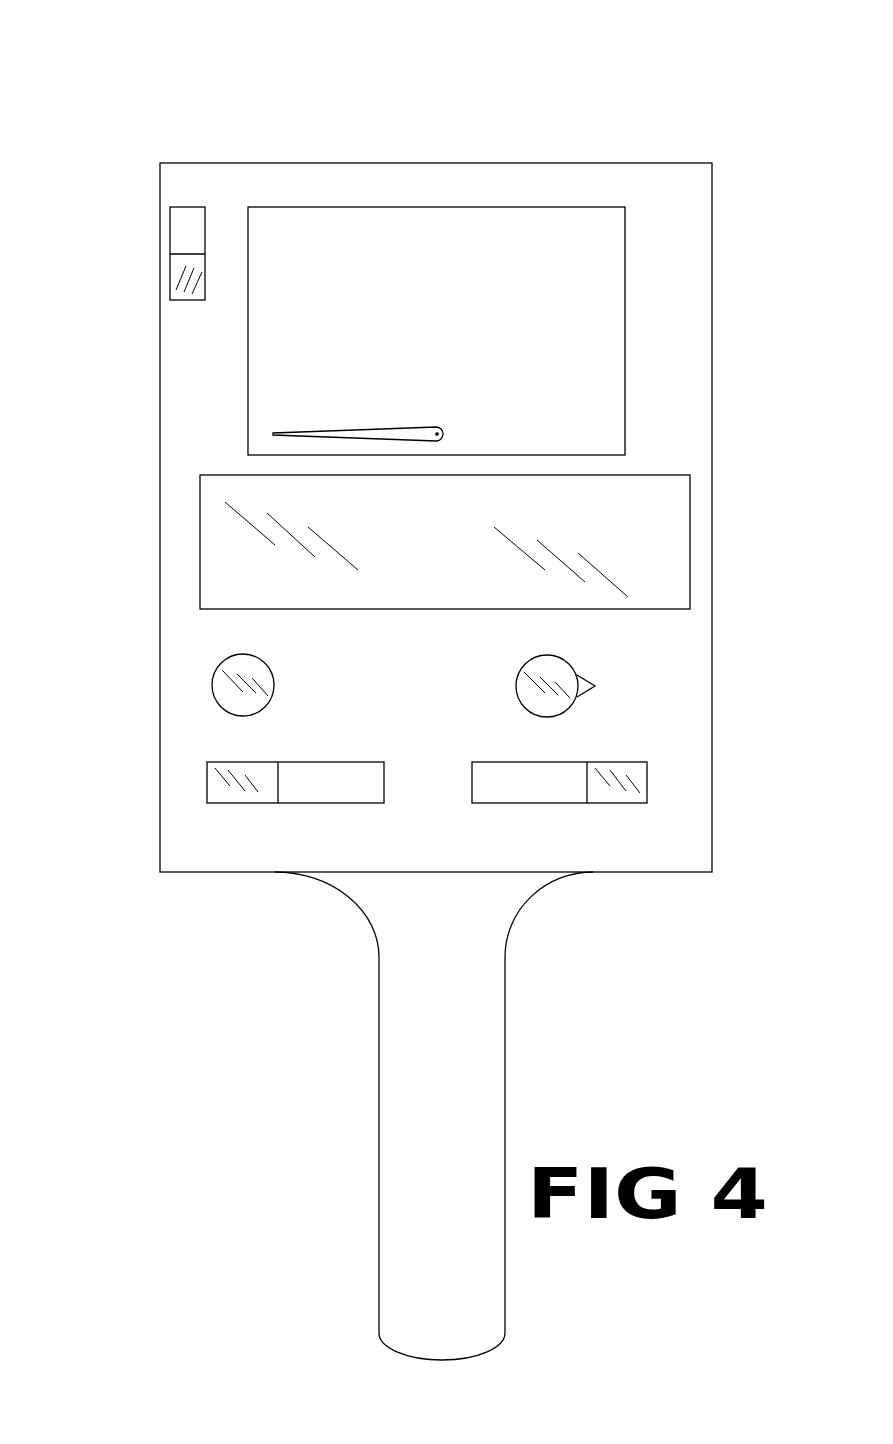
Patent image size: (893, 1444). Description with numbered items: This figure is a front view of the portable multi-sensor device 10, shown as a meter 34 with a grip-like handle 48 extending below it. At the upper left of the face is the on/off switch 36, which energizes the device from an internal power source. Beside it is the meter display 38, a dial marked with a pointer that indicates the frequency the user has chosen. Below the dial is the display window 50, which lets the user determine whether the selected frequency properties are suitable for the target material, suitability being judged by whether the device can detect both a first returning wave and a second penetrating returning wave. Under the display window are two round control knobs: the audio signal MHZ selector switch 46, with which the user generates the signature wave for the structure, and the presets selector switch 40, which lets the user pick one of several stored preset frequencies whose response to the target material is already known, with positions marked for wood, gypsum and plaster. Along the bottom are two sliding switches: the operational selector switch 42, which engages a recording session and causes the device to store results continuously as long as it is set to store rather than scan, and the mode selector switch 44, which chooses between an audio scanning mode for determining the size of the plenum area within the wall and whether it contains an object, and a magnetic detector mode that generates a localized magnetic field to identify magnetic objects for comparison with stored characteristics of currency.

The multi-sensor device 10 is at (137, 127).
The meter 34 is at (502, 163).
The on/off switch 36 is at (178, 232).
The meter display 38 is at (378, 220).
The presets selector switch 40 is at (560, 705).
The operational selector switch 42 is at (215, 790).
The mode selector switch 44 is at (640, 778).
The MHZ selector switch 46 is at (218, 688).
The handle 48 is at (398, 1135).
The display 50 is at (208, 490).